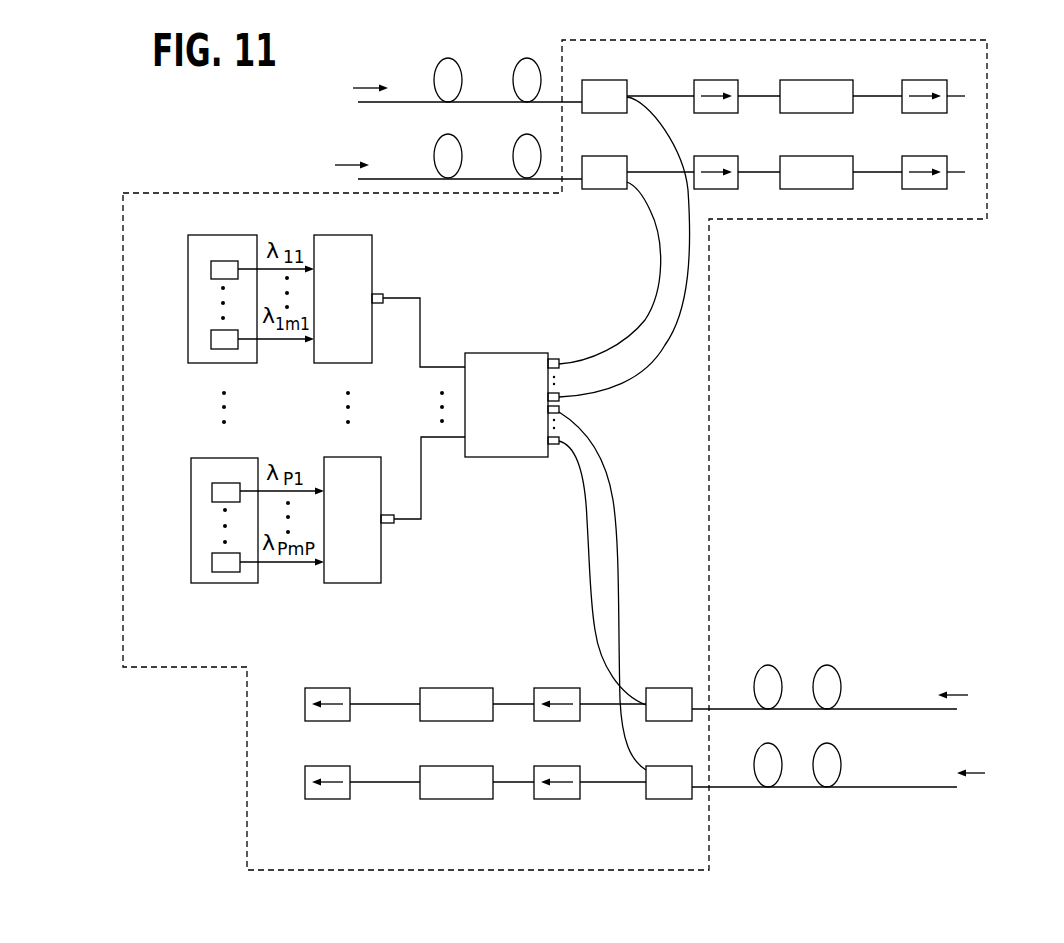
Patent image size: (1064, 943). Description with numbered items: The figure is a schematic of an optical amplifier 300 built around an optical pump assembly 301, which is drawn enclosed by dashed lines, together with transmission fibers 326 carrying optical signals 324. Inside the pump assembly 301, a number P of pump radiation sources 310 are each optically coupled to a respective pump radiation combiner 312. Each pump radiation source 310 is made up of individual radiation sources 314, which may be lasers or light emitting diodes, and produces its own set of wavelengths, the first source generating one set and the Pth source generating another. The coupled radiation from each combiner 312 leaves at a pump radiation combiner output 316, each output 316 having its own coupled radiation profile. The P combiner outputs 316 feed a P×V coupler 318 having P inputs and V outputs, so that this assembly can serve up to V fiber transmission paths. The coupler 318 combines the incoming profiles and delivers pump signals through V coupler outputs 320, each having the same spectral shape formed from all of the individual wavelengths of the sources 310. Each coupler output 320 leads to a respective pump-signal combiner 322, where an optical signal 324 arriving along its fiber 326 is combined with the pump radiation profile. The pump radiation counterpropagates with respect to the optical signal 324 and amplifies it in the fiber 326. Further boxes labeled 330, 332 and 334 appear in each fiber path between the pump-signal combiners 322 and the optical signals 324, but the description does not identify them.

The optical amplifier 300 is at (968, 337).
The optical pump assembly 301 is at (710, 405).
The pump radiation source 310 is at (243, 235).
The pump radiation combiner 312 is at (352, 235).
The individual radiation source 314 is at (213, 261).
The pump radiation combiner output 316 is at (381, 294).
The P×V coupler 318 is at (490, 353).
The coupler output 320 is at (562, 359).
The pump-signal combiner 322 is at (612, 80).
The optical signal 324 is at (355, 88).
The transmission fiber 326 is at (459, 63).
The optical amplifier 330 is at (820, 80).
The optical isolator 332 is at (715, 80).
The optical isolator 334 is at (925, 80).